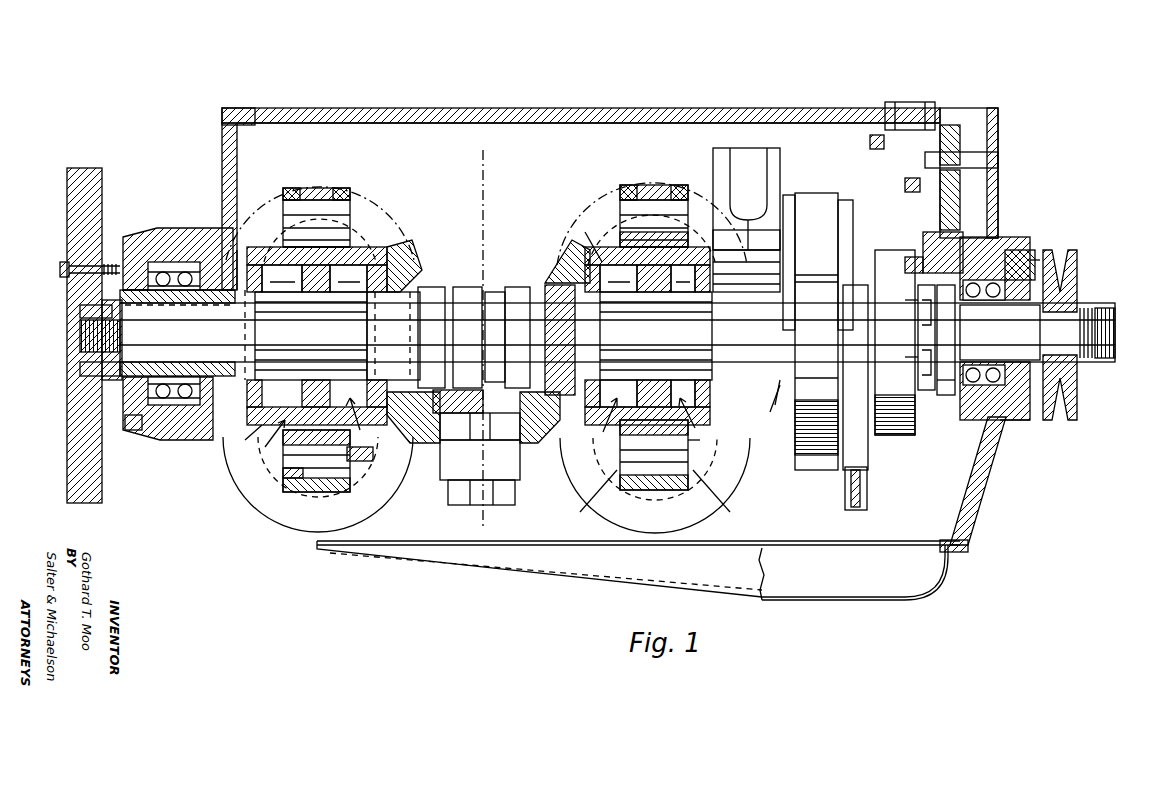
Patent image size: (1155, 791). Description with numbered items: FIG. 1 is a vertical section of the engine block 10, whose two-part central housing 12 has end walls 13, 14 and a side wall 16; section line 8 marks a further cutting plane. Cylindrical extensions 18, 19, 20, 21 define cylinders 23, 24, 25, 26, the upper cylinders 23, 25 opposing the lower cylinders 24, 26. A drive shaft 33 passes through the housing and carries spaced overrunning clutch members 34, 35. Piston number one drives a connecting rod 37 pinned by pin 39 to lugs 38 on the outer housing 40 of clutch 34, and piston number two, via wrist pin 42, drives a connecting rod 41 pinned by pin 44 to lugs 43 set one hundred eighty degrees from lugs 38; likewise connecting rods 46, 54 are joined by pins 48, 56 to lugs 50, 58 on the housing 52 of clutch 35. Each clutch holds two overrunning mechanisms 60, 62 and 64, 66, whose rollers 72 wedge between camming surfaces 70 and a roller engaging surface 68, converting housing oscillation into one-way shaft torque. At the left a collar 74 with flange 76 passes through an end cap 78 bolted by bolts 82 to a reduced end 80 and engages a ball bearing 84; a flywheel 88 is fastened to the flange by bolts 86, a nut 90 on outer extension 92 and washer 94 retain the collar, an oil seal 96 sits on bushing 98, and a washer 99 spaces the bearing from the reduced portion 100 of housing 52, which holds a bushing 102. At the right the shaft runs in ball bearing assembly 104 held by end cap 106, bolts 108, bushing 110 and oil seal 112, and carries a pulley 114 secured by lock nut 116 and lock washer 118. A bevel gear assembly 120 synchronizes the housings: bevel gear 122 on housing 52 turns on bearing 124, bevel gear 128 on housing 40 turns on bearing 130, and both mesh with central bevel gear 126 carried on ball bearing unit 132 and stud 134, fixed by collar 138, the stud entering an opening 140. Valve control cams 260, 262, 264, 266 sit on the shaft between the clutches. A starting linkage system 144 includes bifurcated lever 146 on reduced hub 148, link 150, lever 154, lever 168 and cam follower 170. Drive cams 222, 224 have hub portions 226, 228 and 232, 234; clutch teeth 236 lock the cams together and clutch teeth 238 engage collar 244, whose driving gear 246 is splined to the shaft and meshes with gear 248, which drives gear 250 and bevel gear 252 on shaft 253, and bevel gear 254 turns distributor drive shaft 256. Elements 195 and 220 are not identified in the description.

The engine block 10 is at (522, 101).
The central housing 12 is at (243, 108).
The end wall 13 is at (985, 480).
The end wall 14 is at (222, 150).
The side wall 16 is at (548, 123).
The cylindrical extension 18 is at (633, 145).
The cylindrical extension 19 is at (740, 462).
The cylindrical extension 20 is at (318, 138).
The cylindrical extension 21 is at (265, 520).
The cylinder 23 is at (575, 195).
The cylinder 24 is at (725, 490).
The cylinder 25 is at (356, 160).
The cylinder 26 is at (238, 495).
The drive shaft 33 is at (130, 330).
The overrunning clutch member 34 is at (604, 236).
The overrunning clutch member 35 is at (371, 245).
The connecting rod 37 is at (645, 185).
The spaced lugs 38 is at (628, 185).
The pin 39 is at (618, 215).
The outer housing 40 is at (705, 262).
The connecting rod 41 is at (656, 490).
The wrist pin 42 is at (715, 500).
The spaced lugs 43 is at (591, 500).
The pin 44 is at (690, 452).
The connecting rod 46 is at (314, 188).
The pin 48 is at (348, 215).
The spaced lugs 50 is at (291, 188).
The housing 52 is at (271, 247).
The connecting rod 54 is at (330, 492).
The pin 56 is at (368, 452).
The spaced lugs 58 is at (348, 488).
The overrunning clutch mechanism 60 is at (687, 412).
The overrunning clutch mechanism 62 is at (616, 415).
The overrunning clutch mechanism 64 is at (357, 422).
The overrunning clutch mechanism 66 is at (271, 435).
The roller engaging surface 68 is at (416, 338).
The camming surfaces 70 is at (333, 360).
The rollers 72 is at (300, 278).
The collar 74 is at (182, 305).
The outer flange 76 is at (92, 413).
The end cap 78 is at (150, 232).
The reduced end 80 is at (200, 432).
The bolts 82 is at (130, 430).
The ball bearing 84 is at (174, 262).
The bolts 86 is at (60, 269).
The flywheel 88 is at (88, 180).
The nut 90 is at (80, 310).
The outer extension 92 is at (80, 333).
The washer 94 is at (85, 370).
The oil seal 96 is at (126, 286).
The bushing 98 is at (150, 303).
The washer 99 is at (200, 362).
The annular reduced portion 100 is at (243, 261).
The bushing 102 is at (238, 305).
The ball bearing assembly 104 is at (1000, 240).
The end cap 106 is at (1028, 250).
The bolts 108 is at (1018, 420).
The bushing 110 is at (1008, 348).
The oil seal 112 is at (1030, 252).
The pulley 114 is at (1075, 252).
The lock nut 116 is at (1100, 316).
The lock washer 118 is at (1100, 308).
The bevel gear assembly 120 is at (444, 478).
The bevel gear 122 is at (412, 268).
The bearing 124 is at (390, 292).
The central bevel gear 126 is at (548, 445).
The bevel gear 128 is at (560, 262).
The bearing 130 is at (566, 292).
The ball bearing unit 132 is at (455, 432).
The stud 134 is at (510, 505).
The collar 138 is at (518, 492).
The opening 140 is at (458, 392).
The linkage system 144 is at (806, 146).
The bifurcated lever 146 is at (760, 240).
The reduced hub 148 is at (770, 407).
The link 150 is at (758, 168).
The lever 154 is at (775, 172).
The lever 168 is at (789, 196).
The cam follower 170 is at (846, 200).
The clutch base 195 is at (775, 392).
The plate 220 is at (833, 397).
The drive cam 222 is at (812, 205).
The drive cam 224 is at (905, 435).
The hub portion 226 is at (806, 278).
The hub portion 228 is at (840, 380).
The hub portion 232 is at (921, 337).
The hub portion 234 is at (899, 295).
The clutch teeth 236 is at (910, 257).
The clutch teeth 238 is at (899, 352).
The collar 244 is at (945, 395).
The driving gear 246 is at (950, 396).
The gear 248 is at (930, 232).
The gear 250 is at (962, 116).
The bevel gear 252 is at (900, 182).
The shaft 253 is at (998, 162).
The bevel gear 254 is at (863, 138).
The distributor drive shaft 256 is at (925, 112).
The valve control cam 260 is at (435, 337).
The valve control cam 262 is at (467, 337).
The valve control cam 264 is at (497, 337).
The valve control cam 266 is at (522, 337).
The section line 8 is at (474, 163).